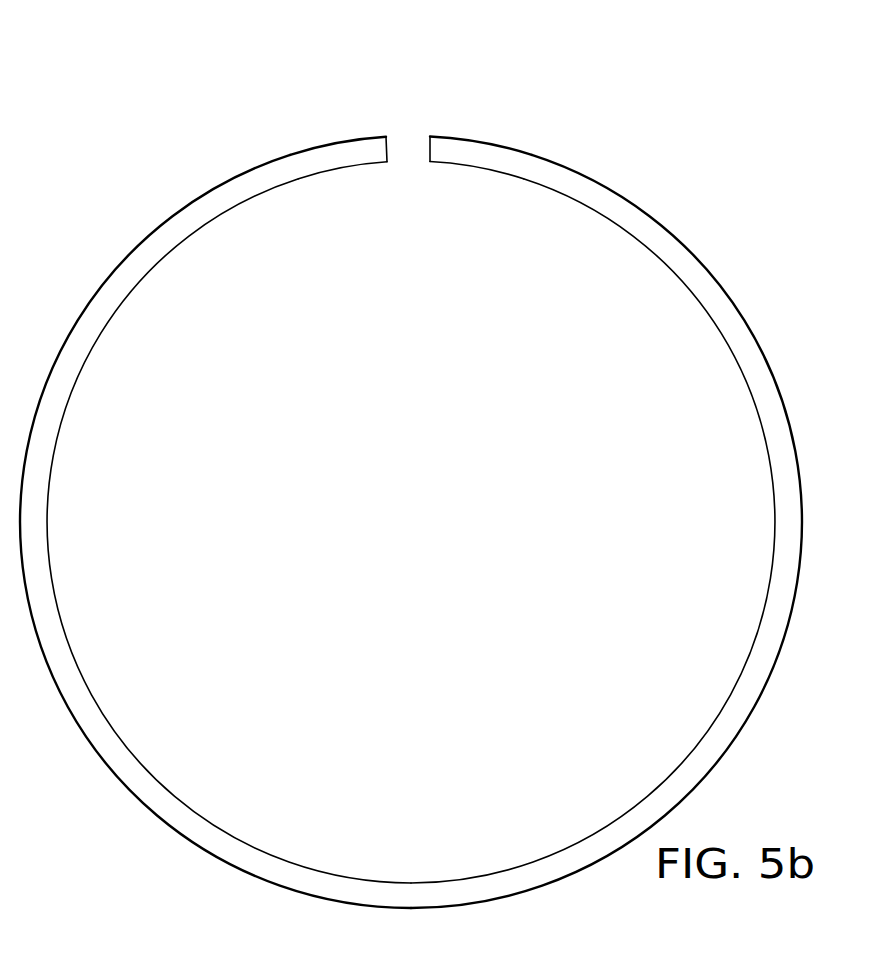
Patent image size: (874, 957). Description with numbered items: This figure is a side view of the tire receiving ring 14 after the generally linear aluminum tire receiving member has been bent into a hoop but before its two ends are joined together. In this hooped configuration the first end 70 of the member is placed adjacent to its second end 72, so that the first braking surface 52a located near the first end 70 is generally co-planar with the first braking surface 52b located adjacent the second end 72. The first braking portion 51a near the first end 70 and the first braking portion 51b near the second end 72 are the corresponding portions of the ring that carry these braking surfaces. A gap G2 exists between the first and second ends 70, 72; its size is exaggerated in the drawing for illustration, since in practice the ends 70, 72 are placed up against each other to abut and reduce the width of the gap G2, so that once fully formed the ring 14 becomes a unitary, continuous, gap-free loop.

The tire receiving ring 14 is at (411, 460).
The first braking portion 51a is at (606, 484).
The first braking portion 51b is at (215, 486).
The first braking surface 52a is at (517, 171).
The first braking surface 52b is at (347, 163).
The gap G2 is at (403, 140).
The first end 70 is at (428, 140).
The second end 72 is at (387, 152).